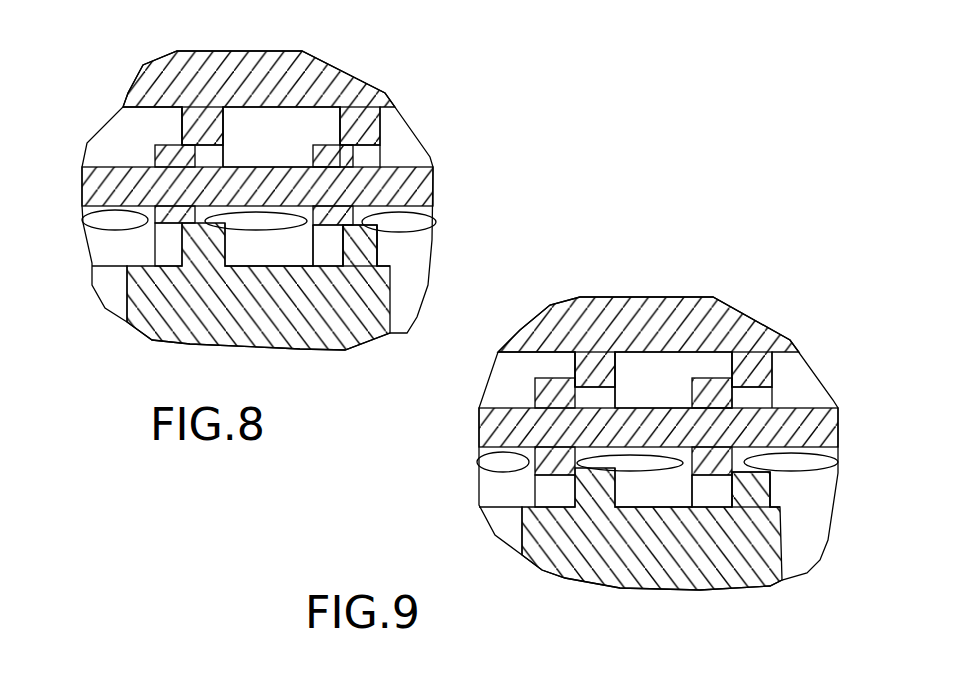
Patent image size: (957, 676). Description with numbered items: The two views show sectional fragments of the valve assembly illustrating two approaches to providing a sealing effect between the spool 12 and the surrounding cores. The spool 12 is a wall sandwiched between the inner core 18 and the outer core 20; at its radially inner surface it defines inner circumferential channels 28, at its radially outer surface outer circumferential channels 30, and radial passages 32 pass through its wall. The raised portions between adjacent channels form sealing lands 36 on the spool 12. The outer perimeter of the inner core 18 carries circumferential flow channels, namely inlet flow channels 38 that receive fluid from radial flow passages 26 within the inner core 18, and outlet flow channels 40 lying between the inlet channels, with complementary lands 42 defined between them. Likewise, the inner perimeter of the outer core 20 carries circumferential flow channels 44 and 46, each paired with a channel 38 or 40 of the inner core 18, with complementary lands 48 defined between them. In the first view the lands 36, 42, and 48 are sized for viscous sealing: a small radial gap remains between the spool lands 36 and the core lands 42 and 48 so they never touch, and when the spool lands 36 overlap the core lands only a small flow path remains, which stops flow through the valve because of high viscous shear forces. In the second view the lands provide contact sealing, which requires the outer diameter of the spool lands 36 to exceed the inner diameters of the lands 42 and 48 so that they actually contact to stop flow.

In FIG. 8, the spool 12 is at (82, 178).
In FIG. 9, the spool 12 is at (837, 420).
In FIG. 8, the inner core 18 is at (282, 340).
In FIG. 9, the inner core 18 is at (700, 560).
In FIG. 8, the outer core 20 is at (300, 82).
In FIG. 9, the outer core 20 is at (648, 342).
In FIG. 8, the radial flow passage 26 is at (110, 287).
In FIG. 9, the radial flow passage 26 is at (503, 525).
In FIG. 8, the inner circumferential channel 28 is at (313, 208).
In FIG. 9, the inner circumferential channel 28 is at (722, 452).
In FIG. 8, the outer circumferential channel 30 is at (250, 157).
In FIG. 9, the outer circumferential channel 30 is at (652, 402).
In FIG. 8, the radial passage 32 is at (262, 222).
In FIG. 9, the radial passage 32 is at (645, 462).
In FIG. 8, the sealing land 36 is at (177, 153).
In FIG. 9, the sealing land 36 is at (557, 395).
In FIG. 8, the inlet flow channel 38 is at (140, 252).
In FIG. 9, the inlet flow channel 38 is at (567, 490).
In FIG. 8, the outlet flow channel 40 is at (290, 253).
In FIG. 9, the outlet flow channel 40 is at (660, 495).
In FIG. 8, the sealing land 42 is at (363, 233).
In FIG. 9, the sealing land 42 is at (755, 472).
In FIG. 8, the circumferential flow channel 44 is at (143, 120).
In FIG. 9, the circumferential flow channel 44 is at (523, 358).
In FIG. 8, the circumferential flow channel 46 is at (280, 118).
In FIG. 9, the circumferential flow channel 46 is at (665, 362).
In FIG. 8, the sealing land 48 is at (210, 147).
In FIG. 9, the sealing land 48 is at (597, 387).